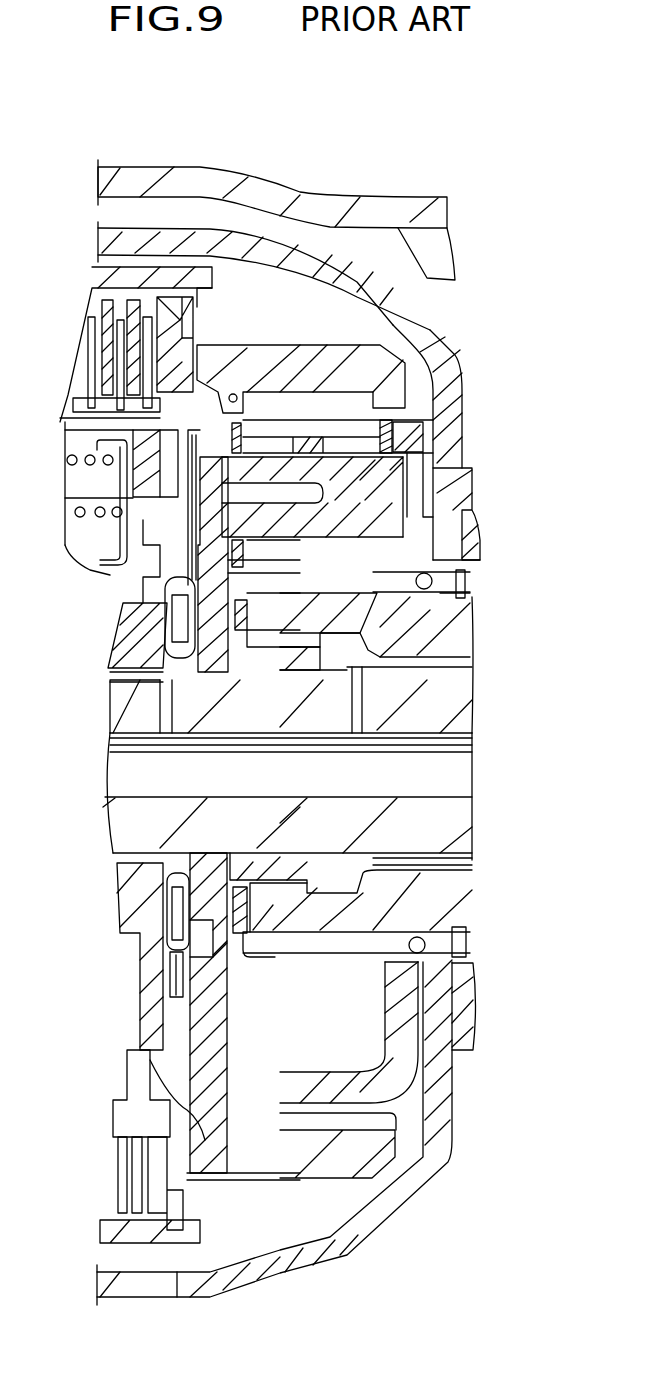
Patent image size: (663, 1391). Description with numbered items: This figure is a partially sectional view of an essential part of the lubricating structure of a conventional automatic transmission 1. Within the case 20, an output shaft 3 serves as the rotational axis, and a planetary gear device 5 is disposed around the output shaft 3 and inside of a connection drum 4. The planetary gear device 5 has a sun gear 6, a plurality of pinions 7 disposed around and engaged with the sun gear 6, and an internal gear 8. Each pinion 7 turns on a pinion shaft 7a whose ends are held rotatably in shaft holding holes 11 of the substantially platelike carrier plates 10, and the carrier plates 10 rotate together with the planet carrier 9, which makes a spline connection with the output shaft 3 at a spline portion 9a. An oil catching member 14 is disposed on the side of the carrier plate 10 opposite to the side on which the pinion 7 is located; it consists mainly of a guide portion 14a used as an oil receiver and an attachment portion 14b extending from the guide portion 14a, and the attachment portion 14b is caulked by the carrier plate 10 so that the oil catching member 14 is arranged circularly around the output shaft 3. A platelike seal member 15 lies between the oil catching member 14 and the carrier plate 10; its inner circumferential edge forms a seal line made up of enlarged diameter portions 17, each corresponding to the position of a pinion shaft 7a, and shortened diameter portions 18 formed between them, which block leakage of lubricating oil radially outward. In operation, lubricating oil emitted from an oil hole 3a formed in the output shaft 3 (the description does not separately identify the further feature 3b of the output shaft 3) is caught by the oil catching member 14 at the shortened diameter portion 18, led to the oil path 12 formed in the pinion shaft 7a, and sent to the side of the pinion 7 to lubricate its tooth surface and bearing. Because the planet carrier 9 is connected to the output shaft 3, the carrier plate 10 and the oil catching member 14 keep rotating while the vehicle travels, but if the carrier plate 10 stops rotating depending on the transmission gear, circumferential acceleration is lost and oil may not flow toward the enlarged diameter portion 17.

The automatic transmission 1 is at (418, 157).
The output shaft 3 is at (442, 697).
The oil hole 3a is at (163, 713).
The hub oil passage 3b is at (362, 717).
The connection drum 4 is at (318, 265).
The planetary gear device 5 is at (407, 352).
The sun gear 6 is at (325, 957).
The pinion 7 is at (393, 392).
The pinion shaft 7a is at (418, 468).
The internal gear 8 is at (234, 395).
The planet carrier 9 is at (380, 438).
The spline portion 9a is at (270, 885).
The carrier plate 10 is at (390, 420).
The shaft holding hole 11 is at (428, 545).
The oil path 12 is at (437, 489).
The oil catching member 14 is at (182, 452).
The guide portion 14a is at (170, 982).
The attachment portion 14b is at (230, 1167).
The seal member 15 is at (187, 982).
The enlarged diameter portion 17 is at (170, 490).
The shortened diameter portion 18 is at (203, 1018).
The case 20 is at (420, 208).